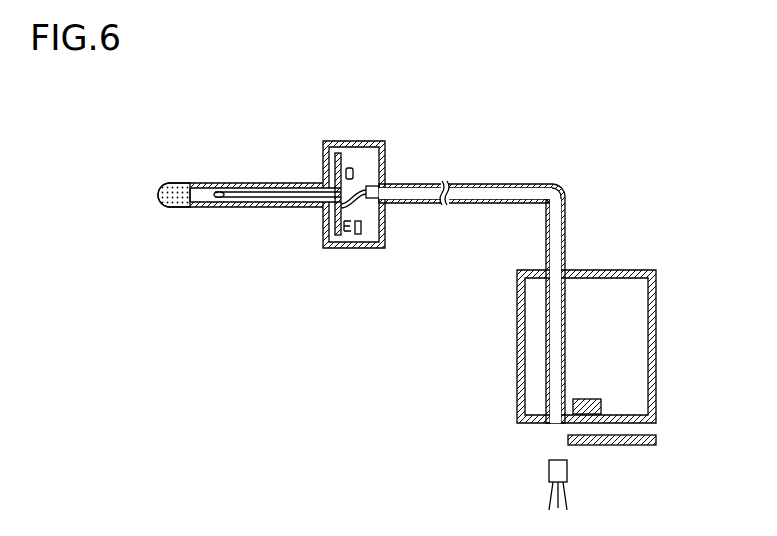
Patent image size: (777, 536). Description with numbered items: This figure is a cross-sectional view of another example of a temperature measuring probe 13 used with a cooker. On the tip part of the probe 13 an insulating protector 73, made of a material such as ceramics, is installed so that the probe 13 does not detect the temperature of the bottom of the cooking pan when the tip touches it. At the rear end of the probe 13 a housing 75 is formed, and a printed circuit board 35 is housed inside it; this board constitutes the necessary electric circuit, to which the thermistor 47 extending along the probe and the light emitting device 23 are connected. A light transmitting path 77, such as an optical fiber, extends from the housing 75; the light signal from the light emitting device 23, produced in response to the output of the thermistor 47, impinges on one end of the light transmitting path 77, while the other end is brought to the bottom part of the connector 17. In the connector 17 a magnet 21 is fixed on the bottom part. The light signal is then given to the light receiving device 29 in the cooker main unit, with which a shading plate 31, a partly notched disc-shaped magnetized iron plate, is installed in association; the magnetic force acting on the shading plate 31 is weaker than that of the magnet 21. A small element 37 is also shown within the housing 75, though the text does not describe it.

The probe 13 is at (272, 181).
The connector 17 is at (657, 273).
The magnet 21 is at (582, 398).
The light emitting device 23 is at (381, 186).
The light receiving device 29 is at (549, 468).
The shading plate 31 is at (628, 447).
The printed circuit board 35 is at (342, 141).
The element 37 is at (353, 248).
The thermistor 47 is at (220, 183).
The protector 73 is at (178, 182).
The housing 75 is at (372, 141).
The light transmitting path 77 is at (553, 184).